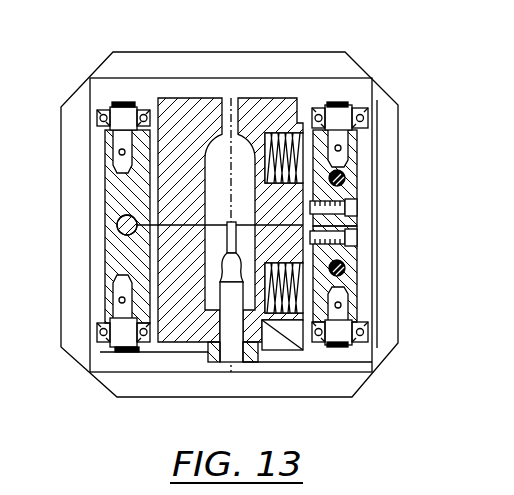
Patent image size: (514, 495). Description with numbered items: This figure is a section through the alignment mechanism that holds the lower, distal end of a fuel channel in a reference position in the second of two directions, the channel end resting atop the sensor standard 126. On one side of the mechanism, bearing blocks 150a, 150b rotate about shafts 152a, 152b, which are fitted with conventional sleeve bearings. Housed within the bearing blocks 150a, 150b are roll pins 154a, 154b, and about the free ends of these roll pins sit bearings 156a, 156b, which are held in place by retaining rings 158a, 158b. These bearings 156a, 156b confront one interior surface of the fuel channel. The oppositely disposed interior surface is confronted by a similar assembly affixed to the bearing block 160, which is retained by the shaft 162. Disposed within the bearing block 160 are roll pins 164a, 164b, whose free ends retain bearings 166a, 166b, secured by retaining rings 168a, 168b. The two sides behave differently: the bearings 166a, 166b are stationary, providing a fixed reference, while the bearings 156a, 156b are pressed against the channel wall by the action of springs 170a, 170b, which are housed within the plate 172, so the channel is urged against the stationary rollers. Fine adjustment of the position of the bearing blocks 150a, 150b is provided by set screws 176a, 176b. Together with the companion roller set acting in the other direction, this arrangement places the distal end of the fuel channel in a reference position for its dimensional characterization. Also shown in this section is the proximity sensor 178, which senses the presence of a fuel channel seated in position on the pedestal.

The sensor standard 126 is at (203, 202).
The bearing block 150a is at (346, 175).
The bearing block 150b is at (346, 268).
The shaft 152a is at (350, 140).
The shaft 152b is at (352, 280).
The roll pin 154a is at (356, 122).
The roll pin 154b is at (355, 303).
The bearing 156a is at (372, 95).
The bearing 156b is at (372, 352).
The retaining ring 158a is at (340, 103).
The retaining ring 158b is at (356, 342).
The bearing block 160 is at (107, 252).
The shaft 162 is at (117, 226).
The roll pin 164a is at (110, 150).
The roll pin 164b is at (110, 305).
The bearing 166a is at (105, 120).
The bearing 166b is at (100, 333).
The retaining ring 168a is at (121, 103).
The retaining ring 168b is at (118, 352).
The spring 170a is at (300, 133).
The spring 170b is at (283, 352).
The plate 172 is at (222, 98).
The set screw 176a is at (357, 208).
The set screw 176b is at (357, 238).
The proximity sensor 178 is at (233, 368).